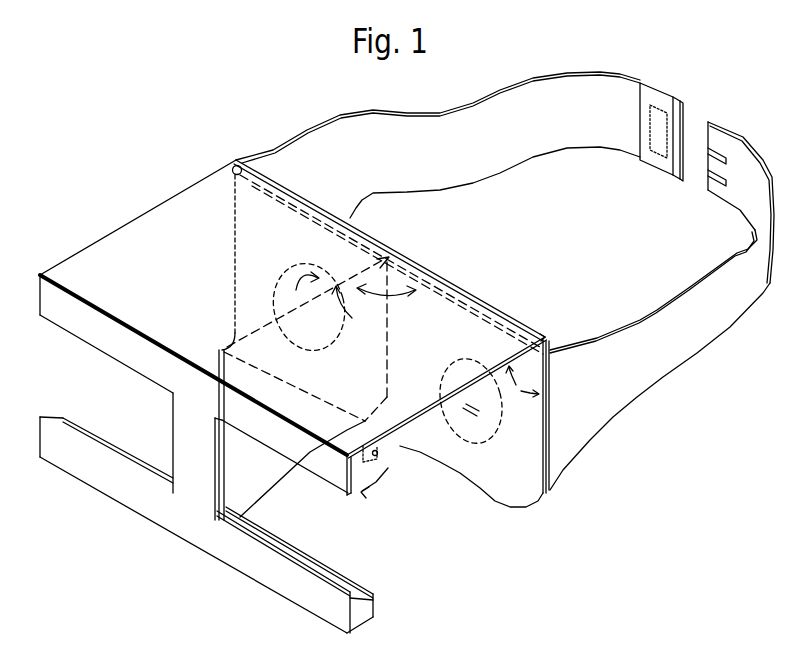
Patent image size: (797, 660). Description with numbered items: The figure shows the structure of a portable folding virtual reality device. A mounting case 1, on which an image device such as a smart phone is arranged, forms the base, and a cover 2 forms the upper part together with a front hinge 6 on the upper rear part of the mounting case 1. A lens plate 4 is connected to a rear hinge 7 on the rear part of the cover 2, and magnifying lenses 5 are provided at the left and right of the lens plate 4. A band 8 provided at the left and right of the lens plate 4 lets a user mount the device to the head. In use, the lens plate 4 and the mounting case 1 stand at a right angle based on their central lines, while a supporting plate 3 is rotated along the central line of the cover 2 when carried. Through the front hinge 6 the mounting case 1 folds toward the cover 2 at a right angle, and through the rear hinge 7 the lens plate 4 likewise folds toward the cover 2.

The mounting case 1 is at (231, 513).
The cover 2 is at (293, 327).
The supporting plate 3 is at (302, 351).
The lens plate 4 is at (474, 451).
The magnifying lens 5 is at (333, 341).
The front hinge 6 is at (394, 465).
The rear hinge 7 is at (428, 312).
The band 8 is at (505, 261).